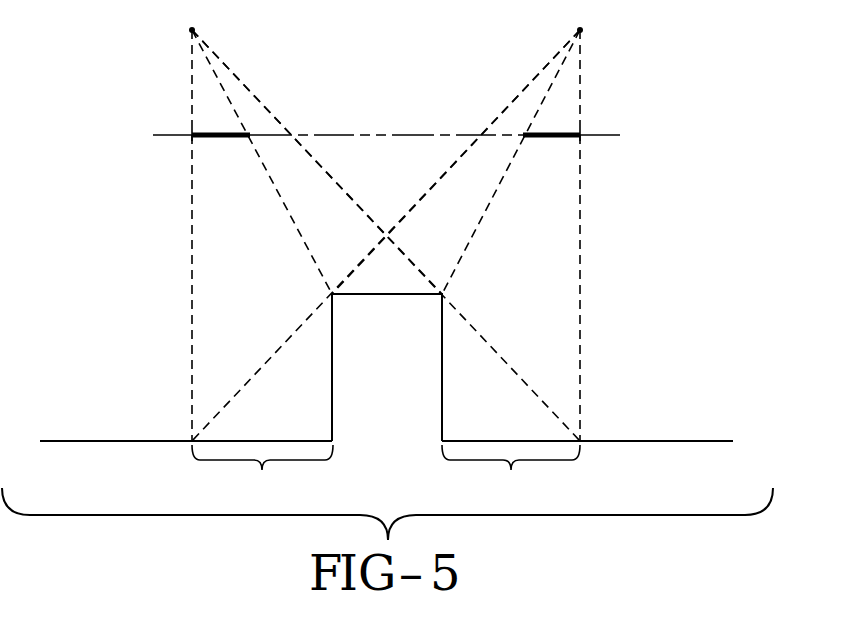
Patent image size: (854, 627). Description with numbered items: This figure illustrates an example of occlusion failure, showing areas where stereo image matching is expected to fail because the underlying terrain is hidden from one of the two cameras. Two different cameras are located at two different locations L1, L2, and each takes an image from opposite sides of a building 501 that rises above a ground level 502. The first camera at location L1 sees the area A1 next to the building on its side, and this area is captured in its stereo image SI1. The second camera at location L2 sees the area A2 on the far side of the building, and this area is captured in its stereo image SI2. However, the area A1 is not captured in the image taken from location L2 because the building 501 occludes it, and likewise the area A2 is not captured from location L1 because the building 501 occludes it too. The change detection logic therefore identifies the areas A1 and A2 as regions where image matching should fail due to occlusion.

The building 501 is at (332, 408).
The ground level 502 is at (643, 441).
The first camera location L1 is at (192, 18).
The second camera location L2 is at (580, 18).
The first stereo image SI1 is at (223, 142).
The second stereo image SI2 is at (550, 142).
The first area A1 is at (262, 472).
The second area A2 is at (511, 472).